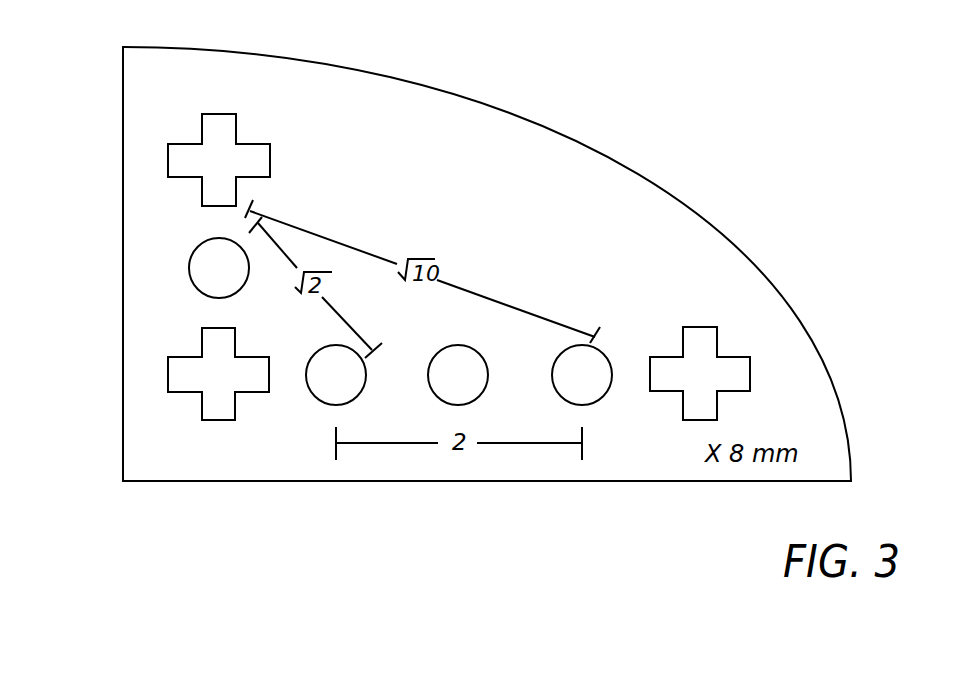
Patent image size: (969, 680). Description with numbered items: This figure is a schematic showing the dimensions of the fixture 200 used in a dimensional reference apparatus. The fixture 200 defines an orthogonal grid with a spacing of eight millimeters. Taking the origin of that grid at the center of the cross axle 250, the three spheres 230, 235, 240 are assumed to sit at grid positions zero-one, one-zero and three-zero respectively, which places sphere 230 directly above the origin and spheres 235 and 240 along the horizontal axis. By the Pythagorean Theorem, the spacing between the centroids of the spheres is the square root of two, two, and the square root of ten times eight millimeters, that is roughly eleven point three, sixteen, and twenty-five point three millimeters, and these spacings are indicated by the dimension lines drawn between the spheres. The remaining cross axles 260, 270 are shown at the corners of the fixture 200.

The fixture 200 is at (90, 75).
The sphere 230 is at (189, 268).
The sphere 235 is at (320, 402).
The sphere 240 is at (600, 400).
The cross axle 250 is at (168, 373).
The cross axle 260 is at (168, 160).
The cross axle 270 is at (750, 374).